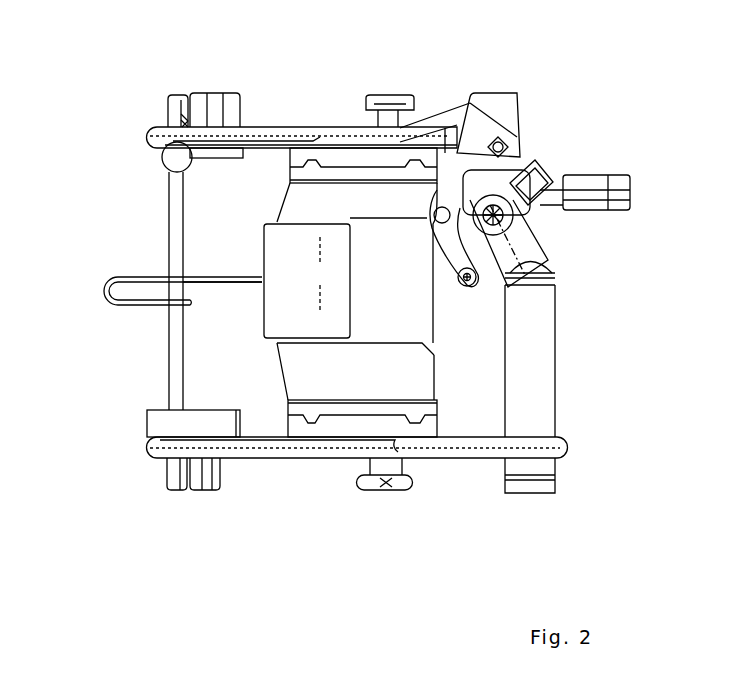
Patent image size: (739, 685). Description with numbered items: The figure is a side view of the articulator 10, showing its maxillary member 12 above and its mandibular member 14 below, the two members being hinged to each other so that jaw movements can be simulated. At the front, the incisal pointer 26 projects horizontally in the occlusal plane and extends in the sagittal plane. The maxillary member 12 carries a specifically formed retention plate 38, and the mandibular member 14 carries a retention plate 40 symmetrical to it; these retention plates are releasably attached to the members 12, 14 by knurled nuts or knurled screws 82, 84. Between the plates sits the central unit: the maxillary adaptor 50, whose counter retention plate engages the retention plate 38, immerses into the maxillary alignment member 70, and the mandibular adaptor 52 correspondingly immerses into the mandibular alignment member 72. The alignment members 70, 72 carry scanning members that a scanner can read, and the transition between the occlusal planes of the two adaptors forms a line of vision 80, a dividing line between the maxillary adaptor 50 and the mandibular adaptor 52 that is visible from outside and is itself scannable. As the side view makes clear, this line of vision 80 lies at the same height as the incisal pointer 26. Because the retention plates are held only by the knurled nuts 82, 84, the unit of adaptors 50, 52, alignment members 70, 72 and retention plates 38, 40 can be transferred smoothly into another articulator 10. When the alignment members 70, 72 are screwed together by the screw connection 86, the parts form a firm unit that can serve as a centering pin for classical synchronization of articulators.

The articulator 10 is at (528, 62).
The maxillary member 12 is at (265, 128).
The mandibular member 14 is at (287, 440).
The incisal pointer 26 is at (127, 284).
The retention plate 38 is at (358, 150).
The retention plate 40 is at (368, 425).
The maxillary adaptor 50 is at (303, 203).
The mandibular adaptor 52 is at (303, 367).
The maxillary alignment member 70 is at (280, 252).
The mandibular alignment member 72 is at (285, 318).
The line of vision 80 is at (287, 278).
The knurled nut 82 is at (392, 104).
The knurled nut 84 is at (398, 490).
The screw connection 86 is at (347, 294).